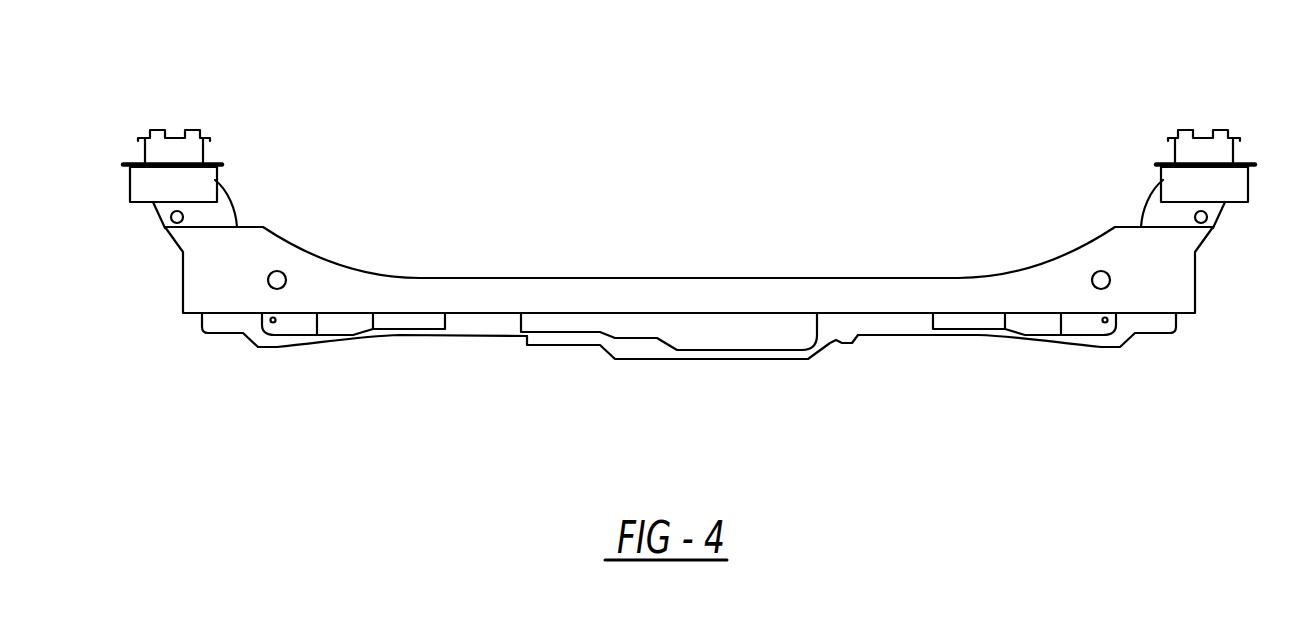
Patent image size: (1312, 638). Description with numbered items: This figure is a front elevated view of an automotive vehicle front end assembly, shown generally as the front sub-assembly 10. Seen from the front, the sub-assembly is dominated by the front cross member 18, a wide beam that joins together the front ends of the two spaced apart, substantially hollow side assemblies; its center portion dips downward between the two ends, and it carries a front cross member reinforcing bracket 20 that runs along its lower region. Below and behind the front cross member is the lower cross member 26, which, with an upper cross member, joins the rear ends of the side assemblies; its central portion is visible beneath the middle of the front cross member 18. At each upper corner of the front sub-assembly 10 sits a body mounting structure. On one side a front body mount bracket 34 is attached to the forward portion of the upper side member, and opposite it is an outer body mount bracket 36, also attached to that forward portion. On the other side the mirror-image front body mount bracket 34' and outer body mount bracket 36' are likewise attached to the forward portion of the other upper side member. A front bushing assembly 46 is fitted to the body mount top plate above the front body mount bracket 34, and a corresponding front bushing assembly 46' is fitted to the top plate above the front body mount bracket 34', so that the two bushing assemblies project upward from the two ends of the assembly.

The front sub-assembly 10 is at (690, 247).
The front cross member 18 is at (352, 262).
The front cross member reinforcing bracket 20 is at (395, 314).
The lower cross member 26 is at (788, 359).
The front body mount bracket 34 is at (1183, 167).
The front body mount bracket 34' is at (200, 165).
The outer body mount bracket 36 is at (1235, 237).
The outer body mount bracket 36' is at (144, 256).
The front bushing assembly 46 is at (1204, 99).
The front bushing assembly 46' is at (174, 100).